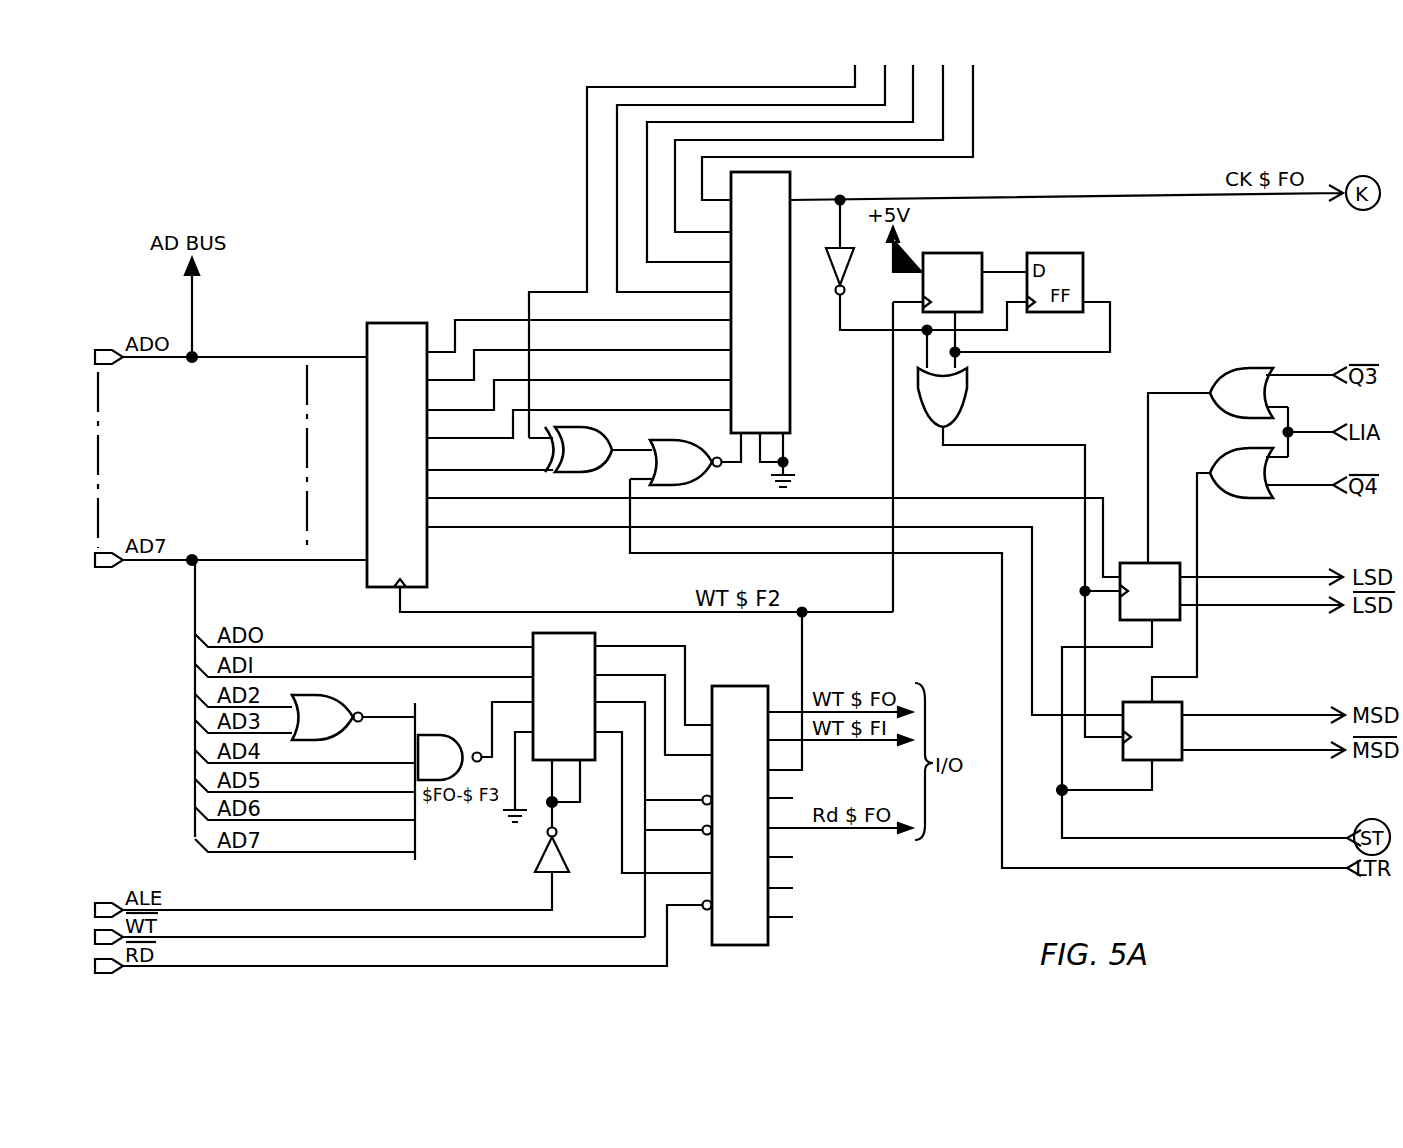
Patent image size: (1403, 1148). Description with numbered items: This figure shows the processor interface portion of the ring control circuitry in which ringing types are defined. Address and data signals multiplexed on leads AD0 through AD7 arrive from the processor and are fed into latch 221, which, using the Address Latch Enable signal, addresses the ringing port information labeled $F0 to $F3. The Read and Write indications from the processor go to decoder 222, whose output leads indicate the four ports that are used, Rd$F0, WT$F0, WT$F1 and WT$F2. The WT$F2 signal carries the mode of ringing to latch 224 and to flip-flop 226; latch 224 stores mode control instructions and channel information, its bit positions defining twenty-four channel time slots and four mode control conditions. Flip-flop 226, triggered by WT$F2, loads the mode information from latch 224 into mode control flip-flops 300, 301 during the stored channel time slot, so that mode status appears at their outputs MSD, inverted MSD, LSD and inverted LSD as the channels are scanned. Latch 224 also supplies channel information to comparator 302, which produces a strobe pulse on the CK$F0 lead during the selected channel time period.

The latch 221 is at (542, 764).
The decoder 222 is at (778, 935).
The latch 224 is at (430, 575).
The flip-flop 226 is at (960, 253).
The mode control flip-flop 300 is at (1182, 567).
The mode control flip-flop 301 is at (1182, 704).
The comparator 302 is at (790, 405).